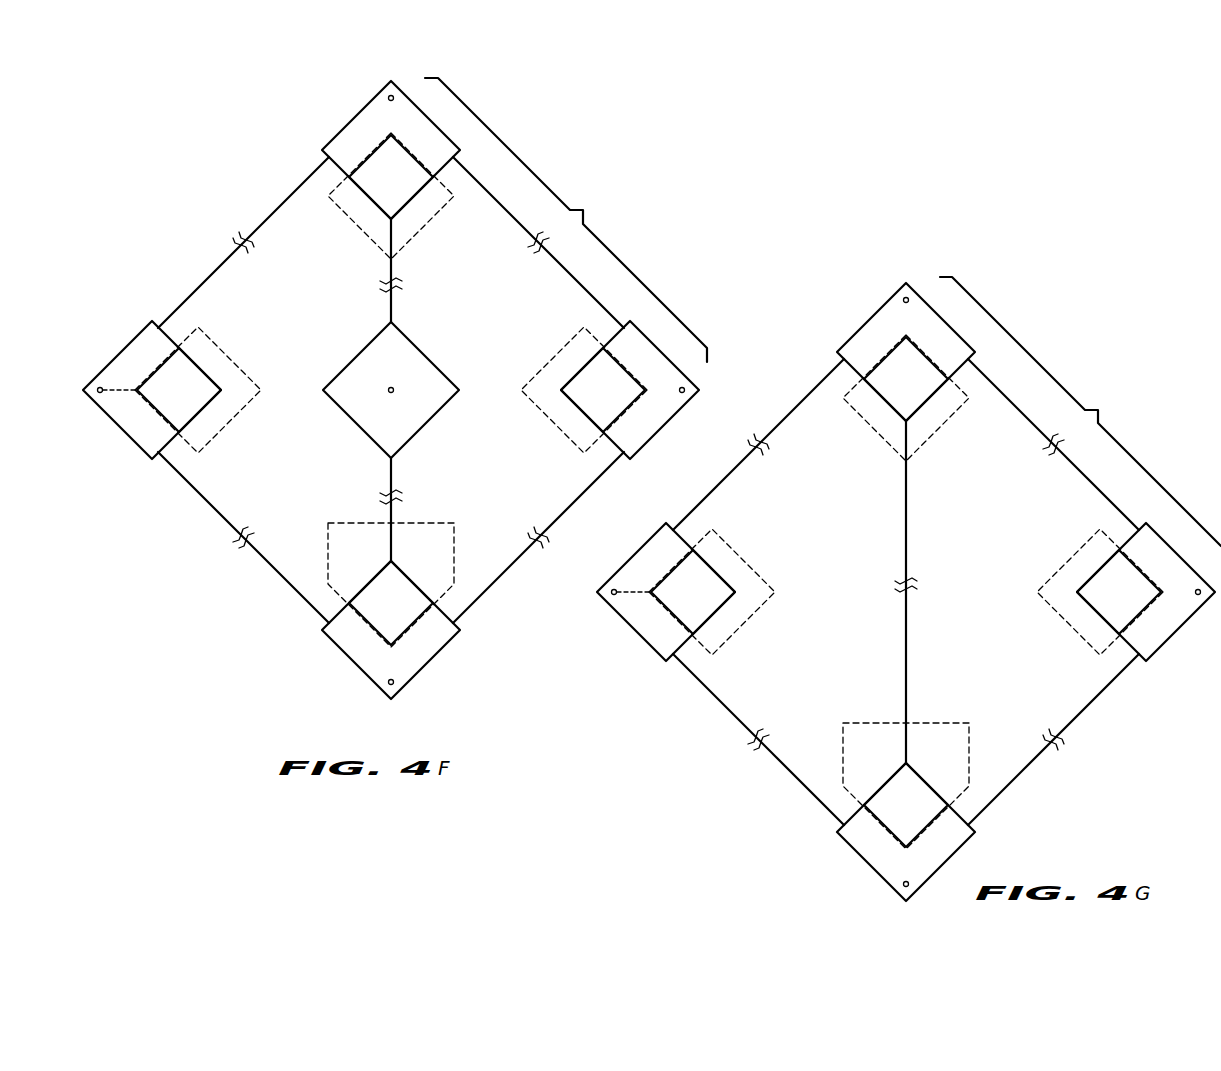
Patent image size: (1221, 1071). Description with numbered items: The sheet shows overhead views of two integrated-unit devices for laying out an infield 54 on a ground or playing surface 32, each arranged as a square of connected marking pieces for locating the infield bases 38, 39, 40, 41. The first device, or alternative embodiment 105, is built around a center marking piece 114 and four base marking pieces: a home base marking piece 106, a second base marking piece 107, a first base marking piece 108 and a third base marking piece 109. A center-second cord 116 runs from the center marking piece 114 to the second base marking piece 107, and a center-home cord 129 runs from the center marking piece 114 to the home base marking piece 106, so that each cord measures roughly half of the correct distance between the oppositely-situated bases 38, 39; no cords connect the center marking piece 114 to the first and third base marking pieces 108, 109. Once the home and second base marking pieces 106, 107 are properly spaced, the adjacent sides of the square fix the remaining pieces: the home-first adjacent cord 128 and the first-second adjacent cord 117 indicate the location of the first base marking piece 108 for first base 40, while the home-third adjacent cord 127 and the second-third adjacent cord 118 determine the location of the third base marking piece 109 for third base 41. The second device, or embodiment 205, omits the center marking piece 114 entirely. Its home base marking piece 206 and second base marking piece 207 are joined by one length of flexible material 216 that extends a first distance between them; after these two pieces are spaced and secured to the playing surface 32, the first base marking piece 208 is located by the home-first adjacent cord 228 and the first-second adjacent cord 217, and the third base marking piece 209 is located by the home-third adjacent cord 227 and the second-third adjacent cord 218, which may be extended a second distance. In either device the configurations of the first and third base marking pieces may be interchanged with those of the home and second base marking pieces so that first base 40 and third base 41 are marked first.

In FIG. 4F, the ground/playing surface 32 is at (365, 397).
In FIG. 4G, the ground/playing surface 32 is at (891, 587).
In FIG. 4F, the infield base 38 is at (447, 541).
In FIG. 4G, the infield base 38 is at (953, 733).
In FIG. 4F, the infield base 39 is at (357, 216).
In FIG. 4G, the infield base 39 is at (883, 425).
In FIG. 4F, the first base 40 is at (566, 357).
In FIG. 4G, the first base 40 is at (1075, 567).
In FIG. 4F, the third base 41 is at (209, 348).
In FIG. 4G, the third base 41 is at (750, 605).
In FIG. 4F, the infield 54 is at (566, 220).
In FIG. 4G, the infield 54 is at (1080, 411).
In FIG. 4F, the alternative embodiment of a device 105 is at (332, 95).
In FIG. 4F, the home base marking piece 106 is at (431, 641).
In FIG. 4F, the second base marking piece 107 is at (350, 140).
In FIG. 4F, the first base marking piece 108 is at (650, 425).
In FIG. 4F, the third base marking piece 109 is at (141, 350).
In FIG. 4F, the center marking piece 114 is at (413, 368).
In FIG. 4F, the center-second cord 116 is at (390, 307).
In FIG. 4F, the first-second adjacent cord 117 is at (490, 202).
In FIG. 4F, the second-third adjacent cord 118 is at (272, 214).
In FIG. 4F, the home-third adjacent cord 127 is at (276, 573).
In FIG. 4F, the home-first adjacent cord 128 is at (500, 578).
In FIG. 4F, the center-home cord 129 is at (389, 477).
In FIG. 4G, the alternative embodiment of a device 205 is at (866, 894).
In FIG. 4G, the home base marking piece 206 is at (860, 837).
In FIG. 4G, the second base marking piece 207 is at (875, 332).
In FIG. 4G, the first base marking piece 208 is at (1170, 626).
In FIG. 4G, the third base marking piece 209 is at (648, 625).
In FIG. 4G, the length of flexible material 216 is at (904, 520).
In FIG. 4G, the first-second adjacent cord 217 is at (1018, 412).
In FIG. 4G, the second-third adjacent cord 218 is at (800, 405).
In FIG. 4G, the home-third adjacent cord 227 is at (793, 772).
In FIG. 4G, the home-first adjacent cord 228 is at (1093, 705).